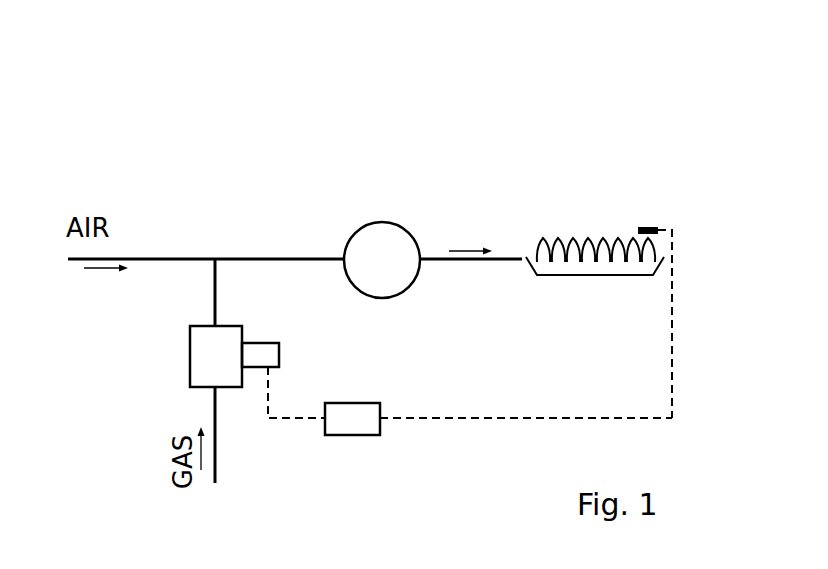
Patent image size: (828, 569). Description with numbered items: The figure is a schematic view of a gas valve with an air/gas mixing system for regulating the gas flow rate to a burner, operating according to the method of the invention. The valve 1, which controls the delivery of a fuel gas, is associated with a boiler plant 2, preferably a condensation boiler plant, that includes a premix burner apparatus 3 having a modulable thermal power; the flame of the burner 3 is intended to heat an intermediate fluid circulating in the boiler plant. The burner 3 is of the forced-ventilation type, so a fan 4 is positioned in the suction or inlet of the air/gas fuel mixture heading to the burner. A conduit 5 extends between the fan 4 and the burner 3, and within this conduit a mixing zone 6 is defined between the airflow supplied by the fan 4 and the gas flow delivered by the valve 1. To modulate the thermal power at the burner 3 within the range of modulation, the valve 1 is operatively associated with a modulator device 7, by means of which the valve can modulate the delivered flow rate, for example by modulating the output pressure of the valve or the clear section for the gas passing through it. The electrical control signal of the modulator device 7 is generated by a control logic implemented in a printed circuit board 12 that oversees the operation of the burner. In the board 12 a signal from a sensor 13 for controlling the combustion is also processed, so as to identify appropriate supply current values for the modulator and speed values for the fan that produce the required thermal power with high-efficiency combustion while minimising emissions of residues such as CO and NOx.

The valve 1 is at (200, 363).
The boiler plant 2 is at (497, 122).
The premix burner apparatus 3 is at (593, 277).
The fan 4 is at (370, 238).
The conduit 5 is at (462, 263).
The mixing zone 6 is at (223, 246).
The modulator device 7 is at (269, 328).
The printed circuit board 12 is at (364, 428).
The sensor 13 is at (648, 226).